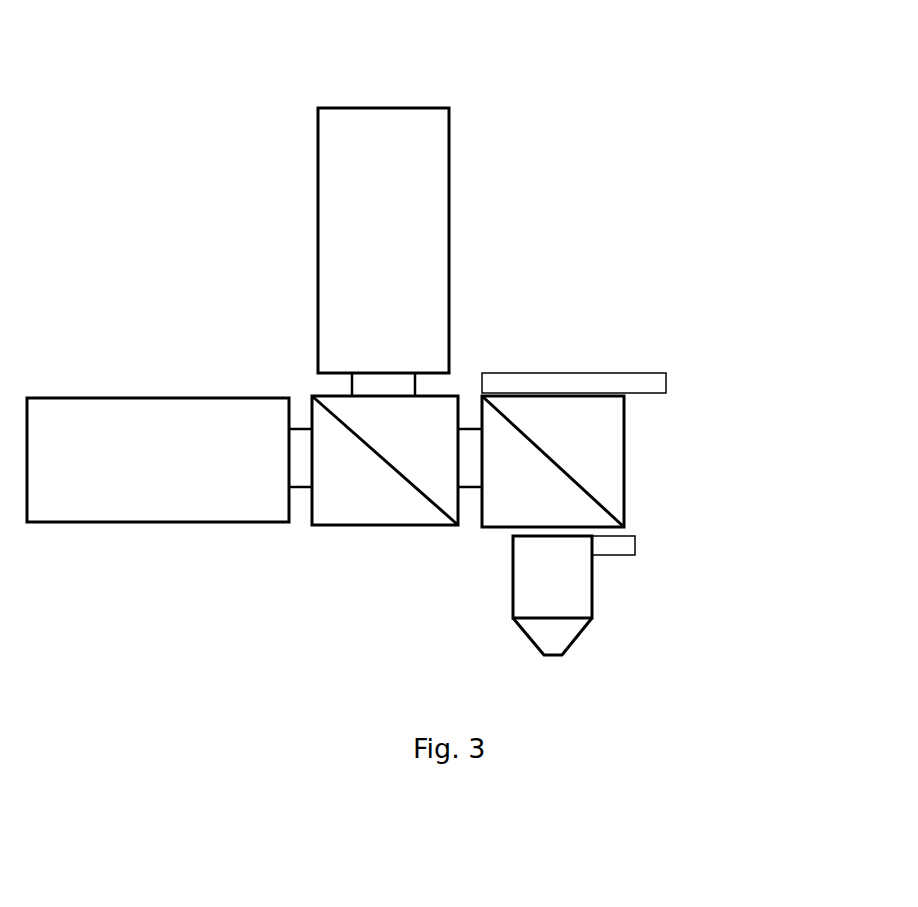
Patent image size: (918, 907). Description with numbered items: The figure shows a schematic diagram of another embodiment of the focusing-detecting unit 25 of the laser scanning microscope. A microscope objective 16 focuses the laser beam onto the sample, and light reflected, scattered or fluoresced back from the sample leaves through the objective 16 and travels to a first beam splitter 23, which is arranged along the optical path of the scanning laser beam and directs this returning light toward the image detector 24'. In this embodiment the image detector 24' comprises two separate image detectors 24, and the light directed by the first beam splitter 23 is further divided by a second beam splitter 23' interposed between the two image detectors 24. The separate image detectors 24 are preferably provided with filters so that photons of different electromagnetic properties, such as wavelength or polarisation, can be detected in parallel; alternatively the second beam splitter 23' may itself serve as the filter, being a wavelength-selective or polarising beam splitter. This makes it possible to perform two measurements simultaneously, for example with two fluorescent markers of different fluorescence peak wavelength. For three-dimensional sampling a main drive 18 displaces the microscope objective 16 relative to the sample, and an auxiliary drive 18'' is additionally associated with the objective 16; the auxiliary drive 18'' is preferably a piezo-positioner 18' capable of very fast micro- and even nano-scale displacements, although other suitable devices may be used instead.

The image detector 24 is at (238, 314).
The image detector 24' is at (133, 225).
The focusing-detecting unit 25 is at (650, 206).
The second beam splitter 23' is at (397, 508).
The first beam splitter 23 is at (605, 461).
The main drive 18 is at (626, 387).
The piezo-positioner 18' is at (703, 542).
The auxiliary drive 18'' is at (703, 542).
The microscope objective 16 is at (592, 590).